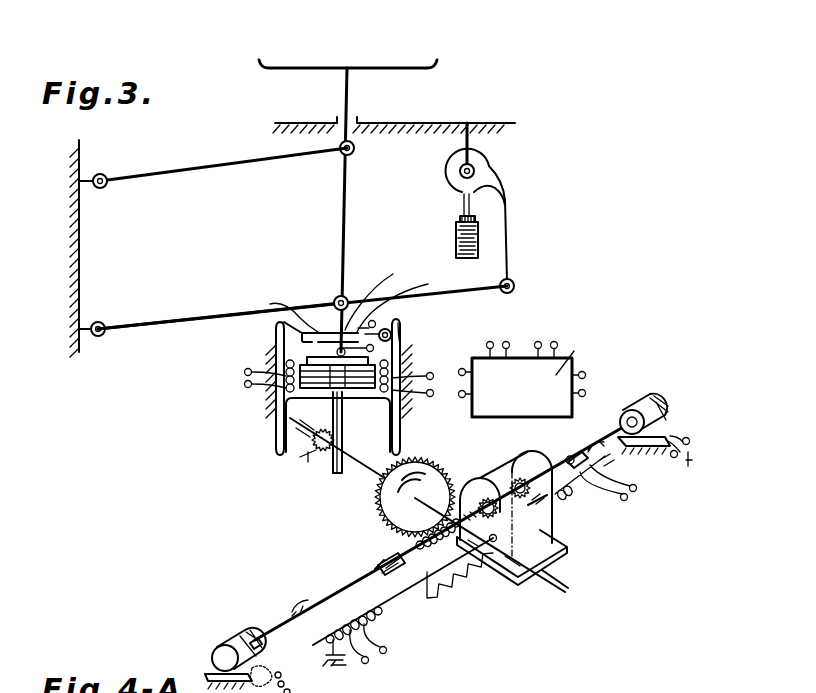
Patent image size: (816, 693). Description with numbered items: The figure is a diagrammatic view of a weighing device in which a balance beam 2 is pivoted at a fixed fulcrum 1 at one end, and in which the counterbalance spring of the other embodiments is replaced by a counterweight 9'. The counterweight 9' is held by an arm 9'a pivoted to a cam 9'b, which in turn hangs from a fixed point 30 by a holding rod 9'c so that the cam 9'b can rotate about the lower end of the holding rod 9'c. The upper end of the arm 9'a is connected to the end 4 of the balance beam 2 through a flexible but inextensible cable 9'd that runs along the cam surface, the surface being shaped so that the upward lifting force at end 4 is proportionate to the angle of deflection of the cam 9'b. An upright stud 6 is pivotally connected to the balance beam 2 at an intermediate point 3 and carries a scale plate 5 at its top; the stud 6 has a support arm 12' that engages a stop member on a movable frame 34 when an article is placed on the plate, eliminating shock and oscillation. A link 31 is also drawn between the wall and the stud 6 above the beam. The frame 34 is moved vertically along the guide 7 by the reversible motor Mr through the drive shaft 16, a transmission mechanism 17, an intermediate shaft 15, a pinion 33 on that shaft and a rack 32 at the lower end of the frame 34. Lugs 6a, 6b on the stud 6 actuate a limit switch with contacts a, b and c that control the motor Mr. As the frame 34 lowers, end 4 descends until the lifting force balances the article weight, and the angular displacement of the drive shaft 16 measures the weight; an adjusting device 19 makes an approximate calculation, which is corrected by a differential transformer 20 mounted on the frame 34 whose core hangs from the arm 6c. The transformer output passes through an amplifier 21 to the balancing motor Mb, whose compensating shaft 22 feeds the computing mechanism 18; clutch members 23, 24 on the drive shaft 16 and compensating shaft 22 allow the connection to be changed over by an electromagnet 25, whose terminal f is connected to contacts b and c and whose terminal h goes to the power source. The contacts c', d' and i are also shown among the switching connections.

The fulcrum 1 is at (104, 322).
The balance beam 2 is at (194, 320).
The intermediate point 3 is at (346, 297).
The end of the balance beam 4 is at (462, 292).
The scale plate 5 is at (360, 68).
The upright stud 6 is at (346, 201).
The lug 6a is at (385, 292).
The lug 6b is at (407, 298).
The arm 6c is at (278, 309).
The guide 7 is at (410, 344).
The counterweight 9' is at (498, 237).
The arm 9'a is at (439, 205).
The cam 9'b is at (513, 181).
The holding rod 9'c is at (449, 170).
The cable 9'd is at (530, 246).
The support arm 12' is at (320, 307).
The intermediate shaft 15 is at (350, 466).
The drive shaft 16 is at (332, 604).
The transmission mechanism 17 is at (440, 580).
The computing mechanism 18 is at (548, 535).
The adjusting device 19 is at (372, 558).
The differential transformer 20 is at (265, 352).
The amplifier 21 is at (522, 358).
The compensating shaft 22 is at (590, 436).
The clutch member 23 is at (460, 490).
The clutch member 24 is at (520, 476).
The electromagnet 25 is at (385, 657).
The fixed point 30 is at (468, 122).
The link 31 is at (150, 182).
The rack 32 is at (340, 416).
The pinion 33 is at (318, 452).
The movable frame 34 is at (404, 442).
The contact a is at (392, 330).
The contact b is at (374, 349).
The contact c is at (384, 309).
The contact c' is at (288, 685).
The contact d' is at (277, 673).
The terminal f is at (390, 660).
The terminal h is at (371, 673).
The terminal i is at (679, 457).
The balancing motor Mb is at (645, 400).
The reversible motor Mr is at (222, 648).